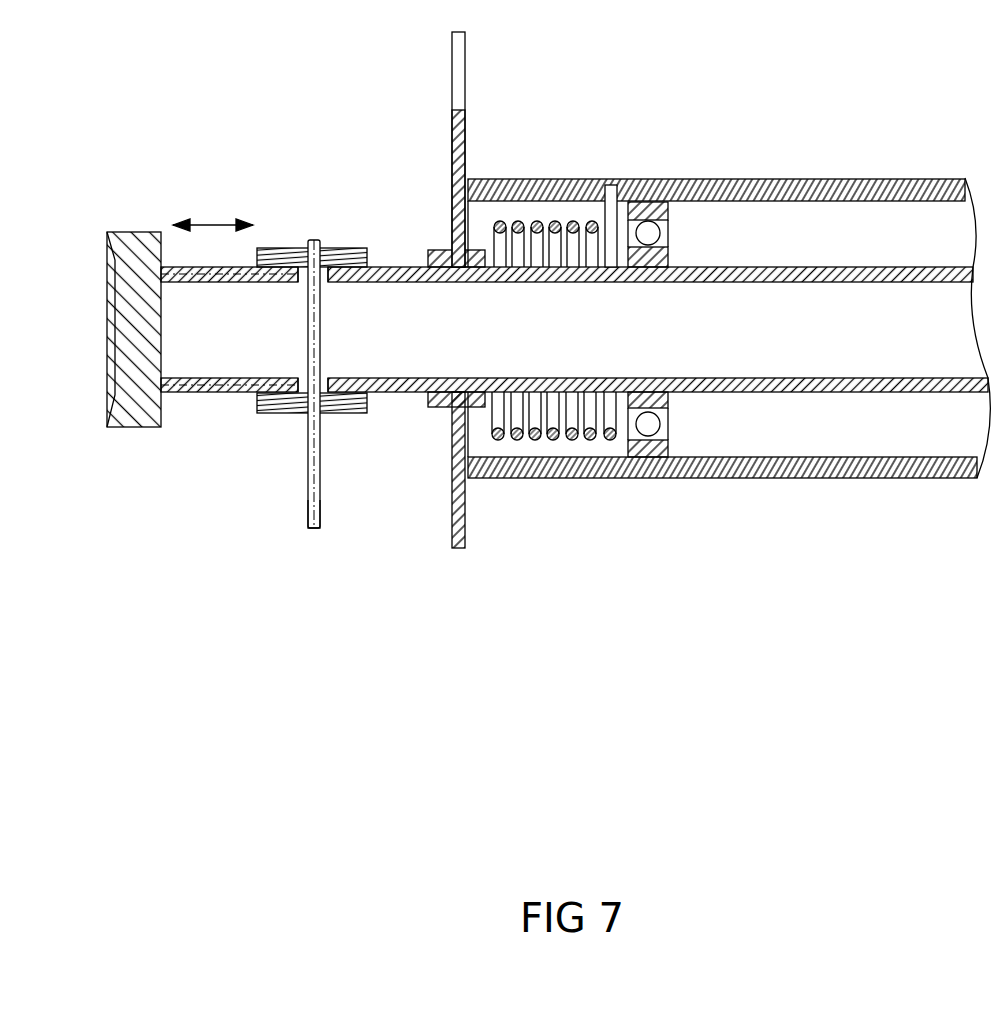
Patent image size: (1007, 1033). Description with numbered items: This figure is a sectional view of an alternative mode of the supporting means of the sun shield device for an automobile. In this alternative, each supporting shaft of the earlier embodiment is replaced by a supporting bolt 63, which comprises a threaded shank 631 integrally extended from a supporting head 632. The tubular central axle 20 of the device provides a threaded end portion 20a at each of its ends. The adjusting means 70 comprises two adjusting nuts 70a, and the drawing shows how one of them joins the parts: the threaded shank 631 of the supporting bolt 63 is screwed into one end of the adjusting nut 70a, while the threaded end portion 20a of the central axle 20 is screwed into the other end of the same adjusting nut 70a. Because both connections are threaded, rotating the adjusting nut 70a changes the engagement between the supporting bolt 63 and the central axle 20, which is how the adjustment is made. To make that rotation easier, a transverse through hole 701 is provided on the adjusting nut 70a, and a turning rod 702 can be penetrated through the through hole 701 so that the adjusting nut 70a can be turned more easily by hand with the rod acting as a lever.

The tubular central axle 20 is at (742, 392).
The threaded end portion 20a is at (377, 392).
The supporting bolt 63 is at (174, 304).
The threaded shank 631 is at (200, 392).
The supporting head 632 is at (127, 400).
The adjusting means 70 is at (297, 374).
The adjusting nut 70a is at (357, 248).
The transverse through hole 701 is at (310, 255).
The turning rod 702 is at (313, 530).